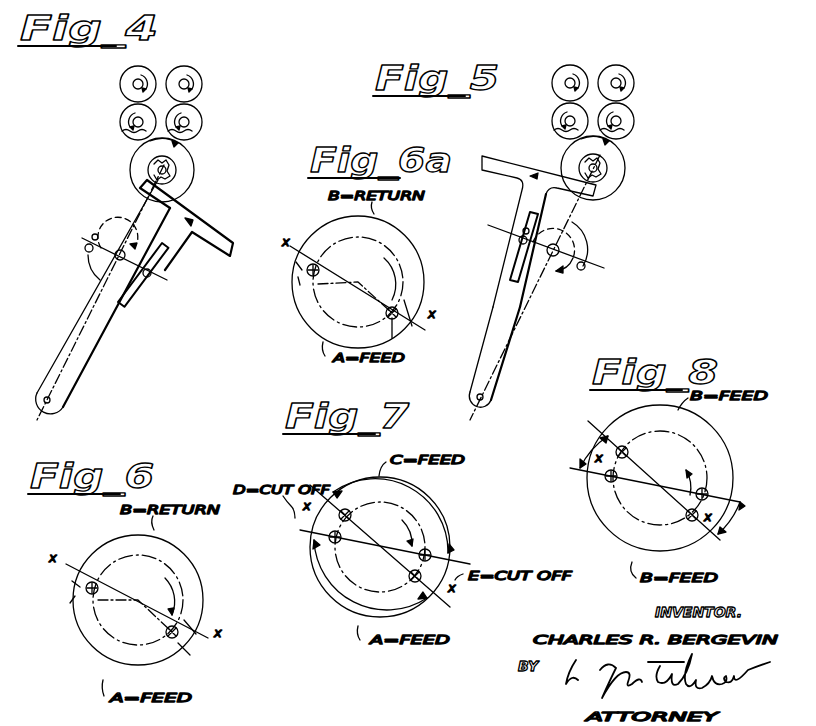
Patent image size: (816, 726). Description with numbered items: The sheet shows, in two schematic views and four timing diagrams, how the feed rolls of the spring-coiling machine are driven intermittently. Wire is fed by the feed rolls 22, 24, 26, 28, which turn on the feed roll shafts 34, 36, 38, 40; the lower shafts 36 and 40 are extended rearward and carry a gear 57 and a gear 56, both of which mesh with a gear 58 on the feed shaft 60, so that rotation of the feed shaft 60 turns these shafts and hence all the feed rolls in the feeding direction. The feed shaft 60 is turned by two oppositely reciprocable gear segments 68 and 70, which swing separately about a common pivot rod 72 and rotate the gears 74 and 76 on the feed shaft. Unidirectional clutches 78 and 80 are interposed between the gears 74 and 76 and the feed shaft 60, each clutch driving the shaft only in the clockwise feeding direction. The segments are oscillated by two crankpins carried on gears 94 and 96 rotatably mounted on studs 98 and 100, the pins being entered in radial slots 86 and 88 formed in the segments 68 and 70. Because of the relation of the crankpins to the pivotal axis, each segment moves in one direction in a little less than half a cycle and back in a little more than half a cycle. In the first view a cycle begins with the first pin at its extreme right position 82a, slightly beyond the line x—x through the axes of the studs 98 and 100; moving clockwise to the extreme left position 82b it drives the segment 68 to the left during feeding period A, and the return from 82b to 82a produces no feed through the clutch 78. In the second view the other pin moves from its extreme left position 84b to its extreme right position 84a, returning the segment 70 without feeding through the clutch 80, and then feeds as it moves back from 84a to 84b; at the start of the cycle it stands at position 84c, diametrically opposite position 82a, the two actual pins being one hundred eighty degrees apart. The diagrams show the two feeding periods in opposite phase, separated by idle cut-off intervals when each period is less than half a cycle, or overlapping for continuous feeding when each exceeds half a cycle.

In FIG. 4, the feed roller 22 is at (196, 68).
In FIG. 5, the feed roller 22 is at (633, 76).
In FIG. 4, the feed roller 24 is at (204, 128).
In FIG. 5, the feed roller 24 is at (635, 120).
In FIG. 4, the feed roller 26 is at (143, 68).
In FIG. 5, the feed roller 26 is at (576, 67).
In FIG. 4, the feed roller 28 is at (123, 130).
In FIG. 5, the feed roller 28 is at (552, 120).
In FIG. 4, the roller shaft 34 is at (202, 84).
In FIG. 4, the lower feed roll shaft 36 is at (200, 118).
In FIG. 4, the roller shaft 38 is at (131, 84).
In FIG. 4, the lower feed roll shaft 40 is at (127, 122).
In FIG. 4, the gear 56 is at (128, 146).
In FIG. 5, the gear 56 is at (567, 135).
In FIG. 4, the gear 57 is at (190, 145).
In FIG. 5, the gear 57 is at (625, 138).
In FIG. 4, the gear 58 is at (190, 170).
In FIG. 5, the gear 58 is at (626, 160).
In FIG. 4, the feed shaft 60 is at (182, 180).
In FIG. 5, the feed shaft 60 is at (600, 168).
In FIG. 4, the first gear segment 68 is at (233, 246).
In FIG. 5, the second gear segment 70 is at (494, 156).
In FIG. 4, the pivot rod 72 is at (52, 400).
In FIG. 5, the pivot rod 72 is at (486, 398).
In FIG. 4, the gear 74 is at (176, 165).
In FIG. 5, the gear 76 is at (610, 188).
In FIG. 4, the unidirectional clutch 78 is at (148, 170).
In FIG. 5, the unidirectional clutch 80 is at (570, 184).
In FIG. 4, the extreme right position of crankpin 82 82a is at (152, 276).
In FIG. 6, the extreme right position of crankpin 82 82a is at (176, 640).
In FIG. 7, the extreme right position of crankpin 82 82a is at (418, 584).
In FIG. 8, the extreme right position of crankpin 82 82a is at (694, 522).
In FIG. 4, the extreme left position of crankpin 82 82b is at (85, 250).
In FIG. 6, the extreme left position of crankpin 82 82b is at (86, 595).
In FIG. 7, the extreme left position of crankpin 82 82b is at (330, 544).
In FIG. 8, the extreme left position of crankpin 82 82b is at (606, 482).
In FIG. 5, the extreme right position of crankpin 84 84a is at (584, 270).
In FIG. 6A, the extreme right position of crankpin 84 84a is at (396, 326).
In FIG. 7, the extreme right position of crankpin 84 84a is at (348, 508).
In FIG. 8, the extreme right position of crankpin 84 84a is at (625, 446).
In FIG. 5, the extreme left position of crankpin 84 84b is at (518, 242).
In FIG. 6A, the extreme left position of crankpin 84 84b is at (308, 276).
In FIG. 7, the extreme left position of crankpin 84 84b is at (430, 548).
In FIG. 8, the extreme left position of crankpin 84 84b is at (708, 488).
In FIG. 4, the position of crankpin 84 at start of cycle 84c is at (94, 234).
In FIG. 5, the position of crankpin 84 at start of cycle 84c is at (526, 228).
In FIG. 4, the radial slot 86 is at (130, 300).
In FIG. 5, the radial slot 88 is at (509, 273).
In FIG. 4, the gear 94 is at (94, 276).
In FIG. 5, the gear 96 is at (586, 244).
In FIG. 4, the stud 98 is at (118, 236).
In FIG. 5, the stud 100 is at (570, 240).